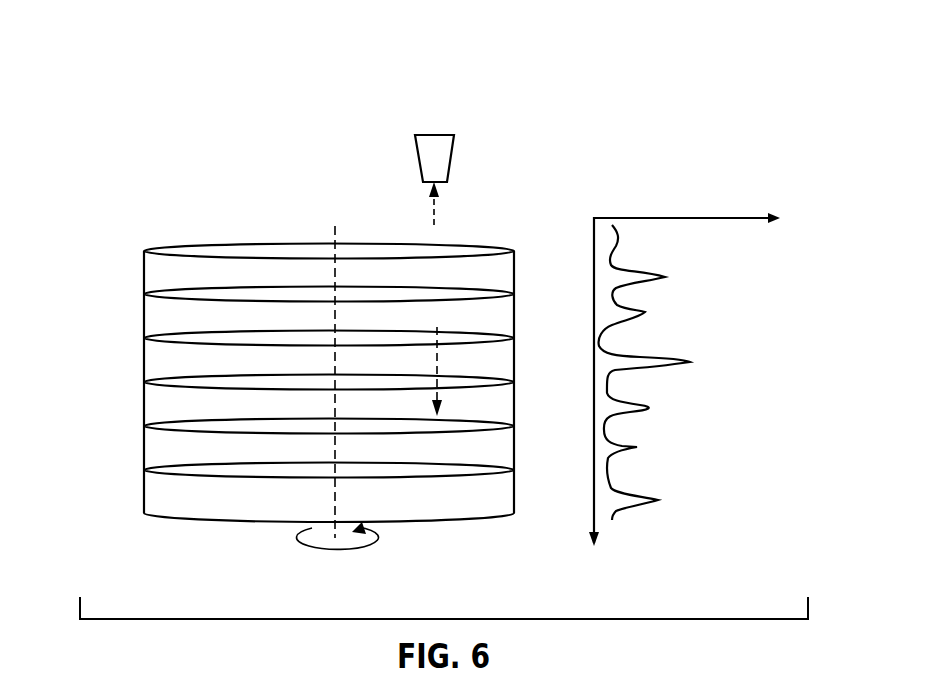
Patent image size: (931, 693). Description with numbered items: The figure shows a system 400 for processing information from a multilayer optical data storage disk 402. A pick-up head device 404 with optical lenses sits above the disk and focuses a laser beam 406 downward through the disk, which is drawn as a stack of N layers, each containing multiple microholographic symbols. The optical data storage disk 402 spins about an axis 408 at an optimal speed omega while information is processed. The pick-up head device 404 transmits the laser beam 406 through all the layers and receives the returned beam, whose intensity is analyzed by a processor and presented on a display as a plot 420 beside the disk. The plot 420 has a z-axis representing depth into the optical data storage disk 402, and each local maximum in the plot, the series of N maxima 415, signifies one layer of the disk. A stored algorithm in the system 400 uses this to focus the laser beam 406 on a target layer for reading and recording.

The system 400 is at (693, 75).
The optical data storage disk 402 is at (165, 88).
The pick-up head device 404 is at (418, 162).
The laser beam 406 is at (432, 216).
The axis 408 is at (300, 548).
The maxima 415 is at (684, 372).
The plot 420 is at (670, 218).